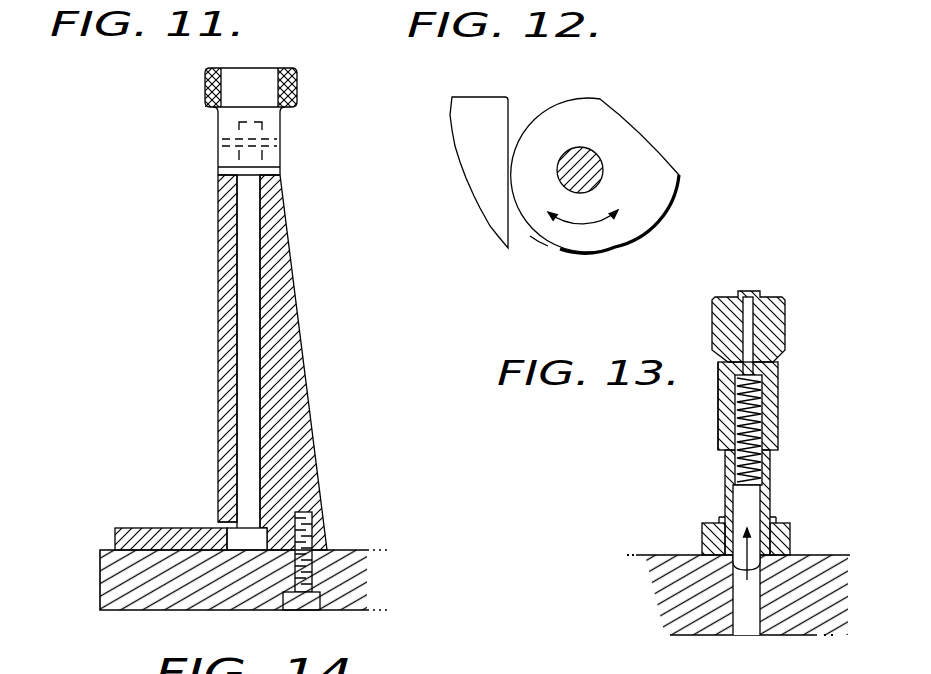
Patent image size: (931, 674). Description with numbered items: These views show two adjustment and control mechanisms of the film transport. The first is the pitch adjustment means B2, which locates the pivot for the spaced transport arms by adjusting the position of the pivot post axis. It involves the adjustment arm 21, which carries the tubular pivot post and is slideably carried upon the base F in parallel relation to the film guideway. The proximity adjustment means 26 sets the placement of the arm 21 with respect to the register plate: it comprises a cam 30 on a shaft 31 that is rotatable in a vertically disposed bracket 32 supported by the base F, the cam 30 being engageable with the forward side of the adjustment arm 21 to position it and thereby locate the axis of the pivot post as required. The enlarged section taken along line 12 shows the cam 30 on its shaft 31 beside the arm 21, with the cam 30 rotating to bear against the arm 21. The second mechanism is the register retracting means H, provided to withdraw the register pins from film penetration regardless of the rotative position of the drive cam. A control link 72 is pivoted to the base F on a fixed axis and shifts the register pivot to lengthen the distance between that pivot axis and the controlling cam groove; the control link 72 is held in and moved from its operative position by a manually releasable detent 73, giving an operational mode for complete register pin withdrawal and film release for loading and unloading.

In FIG. 11, the adjustment arm 21 is at (130, 527).
In FIG. 12, the adjustment arm 21 is at (478, 110).
In FIG. 11, the proximity adjustment means 26 is at (282, 500).
In FIG. 11, the cam 30 is at (232, 540).
In FIG. 12, the cam 30 is at (534, 232).
In FIG. 11, the shaft 31 is at (245, 238).
In FIG. 12, the shaft 31 is at (602, 162).
In FIG. 11, the bracket 32 is at (292, 338).
In FIG. 11, the pitch adjustment means B2 is at (207, 506).
In FIG. 12, the pitch adjustment means B2 is at (636, 106).
In FIG. 11, the base F is at (125, 588).
In FIG. 13, the base F is at (650, 594).
In FIG. 11, the section line 12- 12 is at (80, 527).
In FIG. 13, the register retracting means H is at (697, 447).
In FIG. 13, the control link 72 is at (793, 537).
In FIG. 13, the manually releasable detent 73 is at (748, 503).